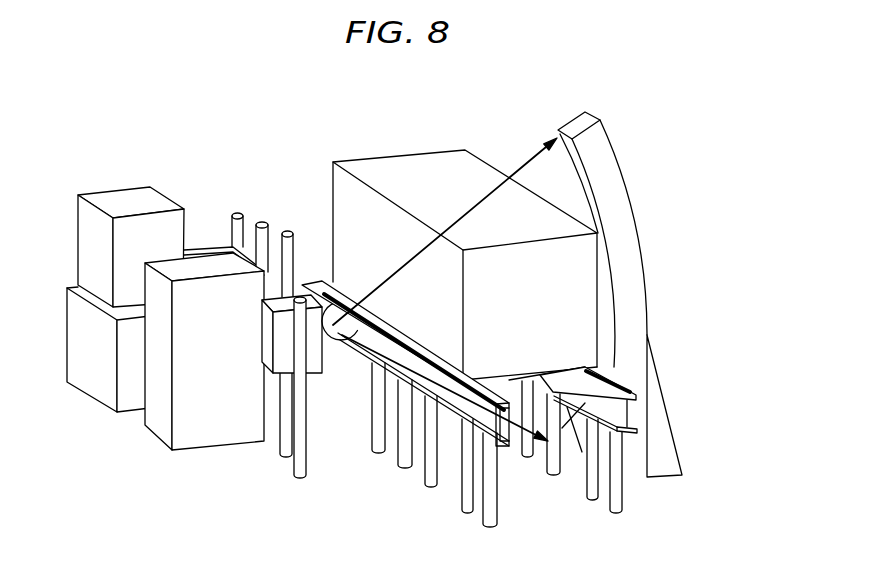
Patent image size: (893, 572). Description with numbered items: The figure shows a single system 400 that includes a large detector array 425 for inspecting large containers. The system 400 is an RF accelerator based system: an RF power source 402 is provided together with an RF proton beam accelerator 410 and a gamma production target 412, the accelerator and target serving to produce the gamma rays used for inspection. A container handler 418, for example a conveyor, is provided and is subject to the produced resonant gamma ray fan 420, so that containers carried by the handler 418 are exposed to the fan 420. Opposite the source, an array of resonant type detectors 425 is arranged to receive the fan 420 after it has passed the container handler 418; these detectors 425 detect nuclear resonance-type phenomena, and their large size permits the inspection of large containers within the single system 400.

The system 400 is at (650, 95).
The RF power source 402 is at (153, 436).
The RF proton beam accelerator 410 is at (265, 222).
The gamma production target 412 is at (287, 456).
The container handler 418 is at (511, 452).
The resonant gamma ray fan 420 is at (529, 162).
The detector array 425 is at (635, 208).